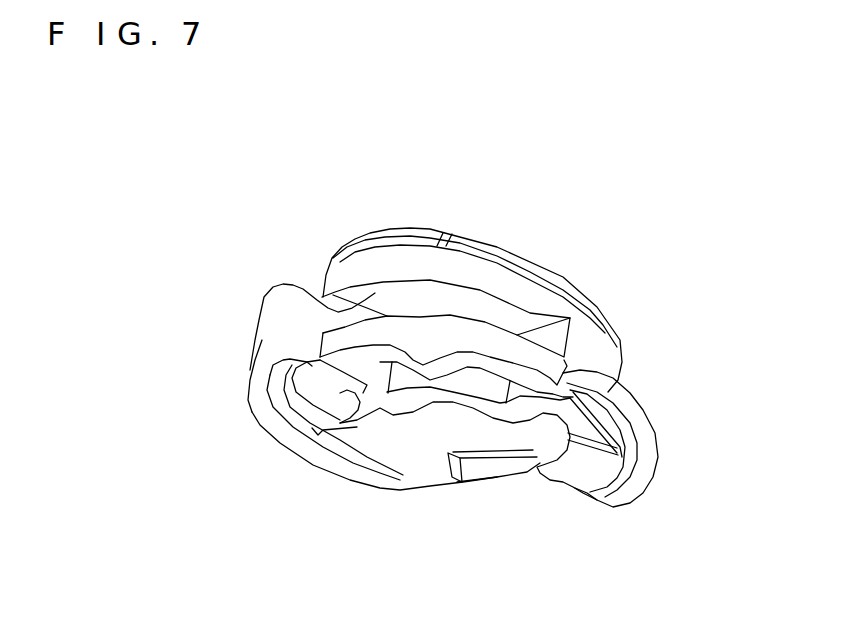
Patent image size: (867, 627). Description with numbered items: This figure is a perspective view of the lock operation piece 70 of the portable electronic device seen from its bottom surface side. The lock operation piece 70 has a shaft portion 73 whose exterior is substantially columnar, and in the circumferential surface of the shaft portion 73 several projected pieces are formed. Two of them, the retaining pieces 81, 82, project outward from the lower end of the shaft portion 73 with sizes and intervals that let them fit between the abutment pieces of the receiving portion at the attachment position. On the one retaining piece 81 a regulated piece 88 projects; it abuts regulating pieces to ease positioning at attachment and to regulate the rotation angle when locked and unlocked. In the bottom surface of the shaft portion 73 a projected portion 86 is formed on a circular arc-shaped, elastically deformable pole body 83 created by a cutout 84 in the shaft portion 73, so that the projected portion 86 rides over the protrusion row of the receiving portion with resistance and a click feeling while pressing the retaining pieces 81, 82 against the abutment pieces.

The lock operation piece 70 is at (656, 172).
The shaft portion 73 is at (593, 352).
The retaining piece 81 is at (267, 408).
The retaining piece 82 is at (640, 413).
The pole body 83 is at (430, 338).
The cutout 84 is at (306, 294).
The projected portion 86 is at (425, 372).
The regulated piece 88 is at (277, 318).